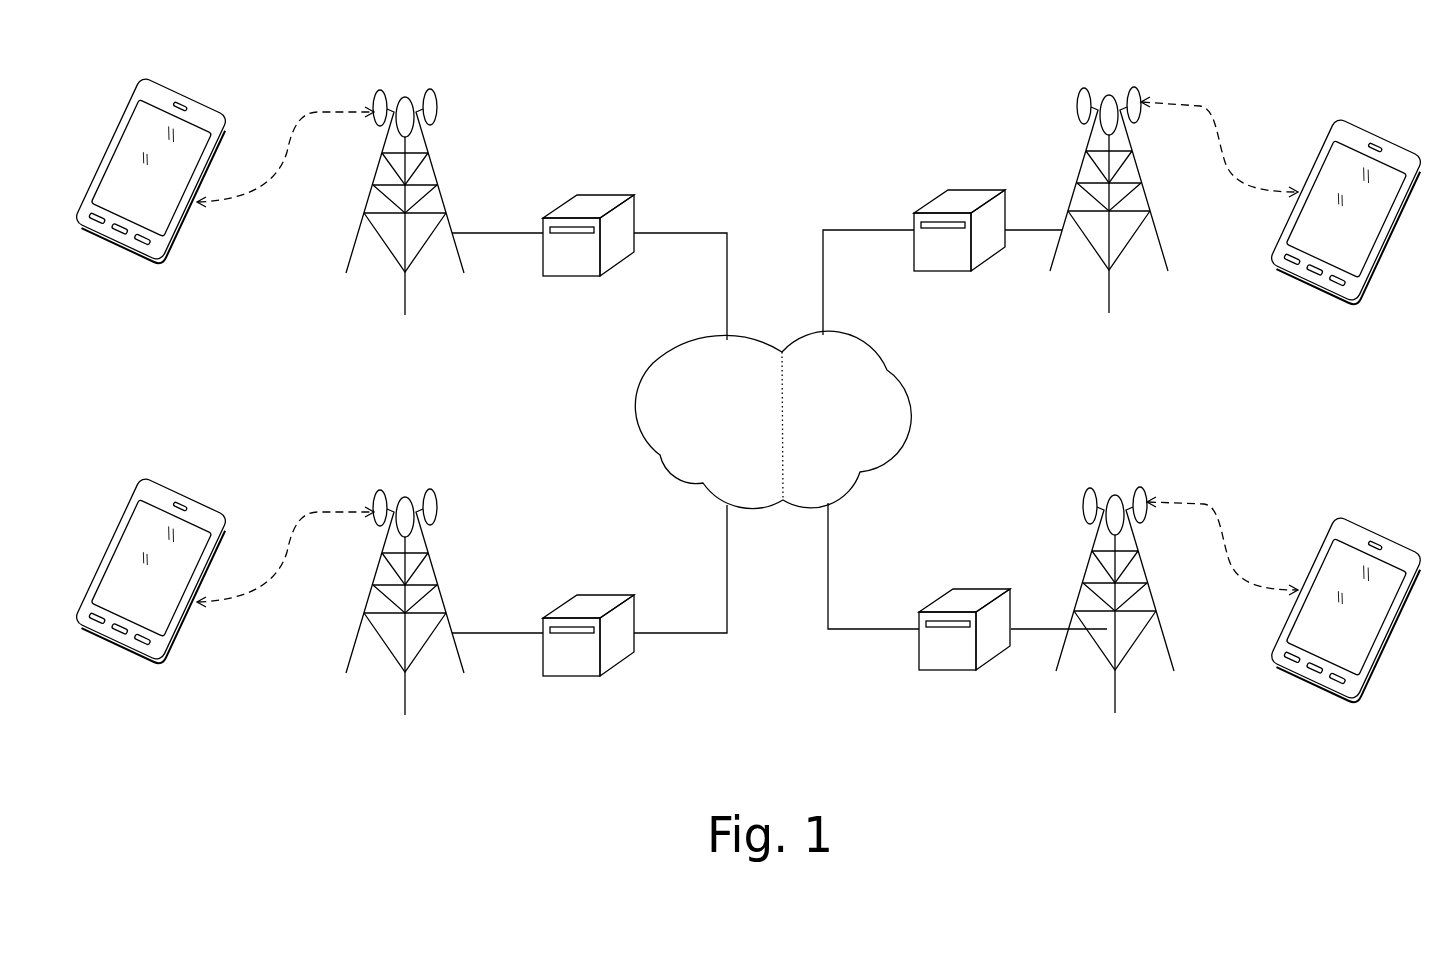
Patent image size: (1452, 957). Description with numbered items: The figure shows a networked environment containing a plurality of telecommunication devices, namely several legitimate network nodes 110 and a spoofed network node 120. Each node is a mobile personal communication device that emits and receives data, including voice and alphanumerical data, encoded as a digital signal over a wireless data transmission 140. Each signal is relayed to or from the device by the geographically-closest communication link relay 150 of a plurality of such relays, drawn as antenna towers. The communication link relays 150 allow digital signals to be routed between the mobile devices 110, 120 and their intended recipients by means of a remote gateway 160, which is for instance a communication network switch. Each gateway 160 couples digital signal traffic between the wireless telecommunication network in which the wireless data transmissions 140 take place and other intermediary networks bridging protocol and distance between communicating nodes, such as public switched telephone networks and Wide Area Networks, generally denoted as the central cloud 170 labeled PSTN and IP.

The legitimate network node 110 is at (179, 92).
The spoofed network node 120 is at (1373, 131).
The wireless data transmission 140 is at (316, 112).
The communication link relay 150 is at (430, 168).
The remote gateway 160 is at (610, 193).
The intermediary networks 170 is at (877, 470).